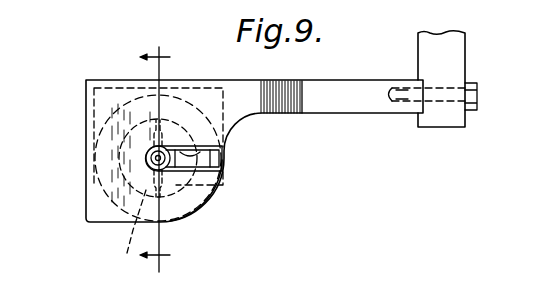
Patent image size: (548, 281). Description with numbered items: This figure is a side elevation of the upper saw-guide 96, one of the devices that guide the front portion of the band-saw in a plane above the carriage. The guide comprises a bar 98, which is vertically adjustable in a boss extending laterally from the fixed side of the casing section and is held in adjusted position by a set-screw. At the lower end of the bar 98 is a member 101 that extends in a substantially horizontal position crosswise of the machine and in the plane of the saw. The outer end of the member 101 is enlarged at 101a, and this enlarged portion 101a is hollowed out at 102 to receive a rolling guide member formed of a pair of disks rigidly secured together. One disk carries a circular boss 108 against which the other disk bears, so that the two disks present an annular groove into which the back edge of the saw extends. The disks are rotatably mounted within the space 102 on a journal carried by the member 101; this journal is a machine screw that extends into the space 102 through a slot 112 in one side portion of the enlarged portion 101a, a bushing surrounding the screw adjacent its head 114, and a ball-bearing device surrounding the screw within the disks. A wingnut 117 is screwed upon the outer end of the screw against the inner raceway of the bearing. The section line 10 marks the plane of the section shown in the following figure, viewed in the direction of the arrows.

The section line 10 is at (157, 156).
The upper saw-guide 96 is at (254, 151).
The bar 98 is at (450, 63).
The member 101 is at (352, 114).
The enlarged portion 101a is at (132, 100).
The hollowed-out space 102 is at (100, 183).
The circular boss 108 is at (126, 256).
The slot 112 is at (224, 150).
The head 114 is at (152, 164).
The wingnut 117 is at (195, 213).